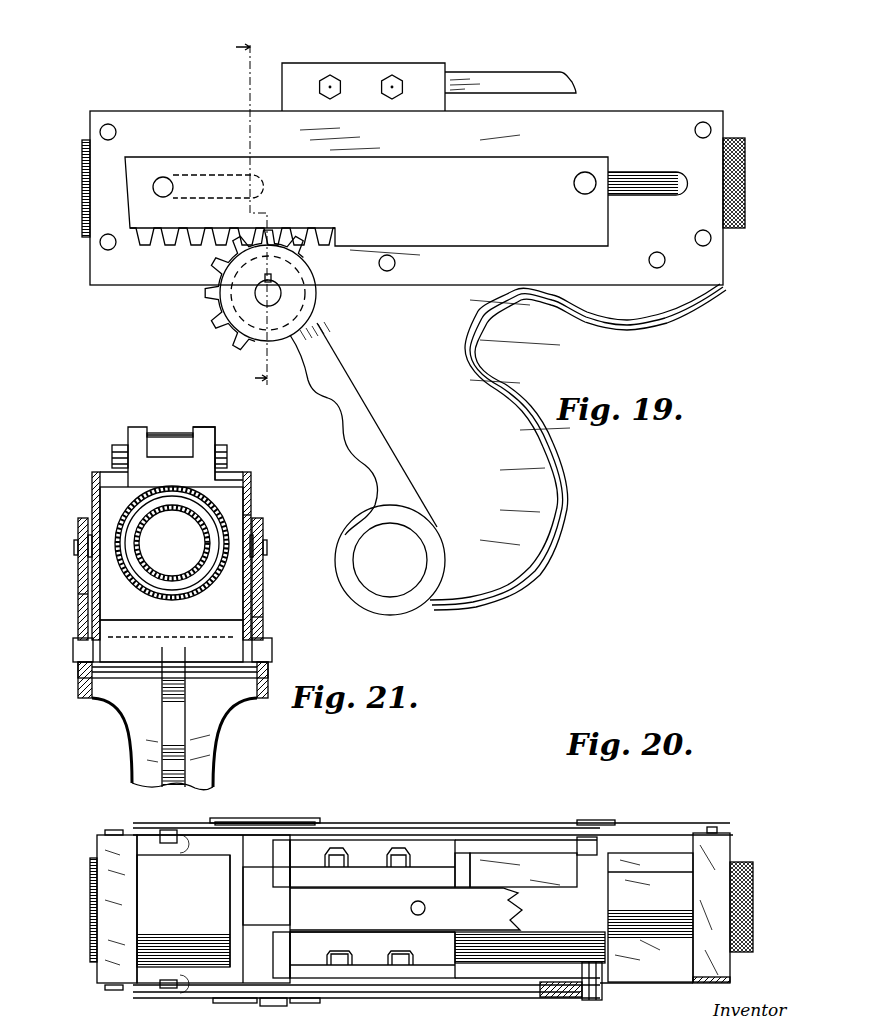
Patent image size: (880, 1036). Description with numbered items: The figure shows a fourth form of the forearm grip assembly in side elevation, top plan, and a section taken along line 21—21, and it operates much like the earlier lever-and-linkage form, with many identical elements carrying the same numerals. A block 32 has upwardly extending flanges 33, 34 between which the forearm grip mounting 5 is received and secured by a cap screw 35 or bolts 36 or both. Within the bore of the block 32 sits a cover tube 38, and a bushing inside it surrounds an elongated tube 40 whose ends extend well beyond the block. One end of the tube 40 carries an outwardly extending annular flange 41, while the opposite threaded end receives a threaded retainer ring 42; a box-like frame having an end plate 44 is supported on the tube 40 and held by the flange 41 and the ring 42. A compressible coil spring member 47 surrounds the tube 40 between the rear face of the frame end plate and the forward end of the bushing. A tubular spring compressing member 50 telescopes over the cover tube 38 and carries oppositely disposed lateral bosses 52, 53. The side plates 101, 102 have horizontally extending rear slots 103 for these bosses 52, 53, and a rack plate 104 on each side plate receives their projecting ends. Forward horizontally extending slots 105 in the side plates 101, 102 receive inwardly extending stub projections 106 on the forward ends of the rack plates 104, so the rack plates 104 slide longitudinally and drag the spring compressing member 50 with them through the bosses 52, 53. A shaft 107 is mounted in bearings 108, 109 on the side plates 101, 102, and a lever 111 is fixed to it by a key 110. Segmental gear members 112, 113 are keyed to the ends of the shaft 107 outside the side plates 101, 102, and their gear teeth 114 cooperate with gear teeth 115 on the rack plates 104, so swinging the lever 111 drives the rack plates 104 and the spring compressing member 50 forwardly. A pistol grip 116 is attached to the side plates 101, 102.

In FIG. 19, the forearm grip mounting 5 is at (536, 75).
In FIG. 21, the forearm grip mounting 5 is at (158, 433).
In FIG. 20, the forearm grip mounting 5 is at (512, 912).
In FIG. 19, the section line 21 is at (252, 214).
In FIG. 21, the block 32 is at (208, 481).
In FIG. 20, the block 32 is at (393, 970).
In FIG. 21, the flange 33 is at (136, 428).
In FIG. 20, the flange 33 is at (340, 878).
In FIG. 19, the flange 34 is at (355, 63).
In FIG. 21, the flange 34 is at (214, 428).
In FIG. 20, the flange 34 is at (360, 943).
In FIG. 21, the cap screw 35 is at (175, 431).
In FIG. 20, the cap screw 35 is at (427, 908).
In FIG. 19, the bolts 36 is at (400, 76).
In FIG. 21, the bolts 36 is at (111, 455).
In FIG. 20, the bolts 36 is at (395, 850).
In FIG. 20, the cover tube 38 is at (460, 862).
In FIG. 21, the elongated tube 40 is at (145, 548).
In FIG. 20, the elongated tube 40 is at (650, 875).
In FIG. 19, the annular flange 41 is at (82, 170).
In FIG. 20, the annular flange 41 is at (92, 895).
In FIG. 19, the threaded retainer ring 42 is at (735, 230).
In FIG. 20, the threaded retainer ring 42 is at (755, 863).
In FIG. 20, the end plate 44 is at (718, 850).
In FIG. 21, the compressible coil spring member 47 is at (203, 520).
In FIG. 20, the spring compressing member 50 is at (525, 860).
In FIG. 19, the boss 52 is at (592, 176).
In FIG. 20, the boss 52 is at (600, 1002).
In FIG. 20, the boss 53 is at (590, 820).
In FIG. 19, the side plate 101 is at (676, 268).
In FIG. 21, the side plate 101 is at (251, 515).
In FIG. 20, the side plate 101 is at (532, 985).
In FIG. 21, the side plate 102 is at (91, 490).
In FIG. 20, the side plate 102 is at (638, 834).
In FIG. 19, the rear slot 103 is at (640, 196).
In FIG. 20, the rear slot 103 is at (655, 985).
In FIG. 19, the rack plate 104 is at (548, 240).
In FIG. 21, the rack plate 104 is at (263, 573).
In FIG. 20, the rack plate 104 is at (475, 995).
In FIG. 19, the forward slot 105 is at (198, 180).
In FIG. 21, the forward slot 105 is at (253, 547).
In FIG. 19, the stub projection 106 is at (163, 177).
In FIG. 21, the stub projection 106 is at (78, 533).
In FIG. 20, the stub projection 106 is at (180, 990).
In FIG. 19, the shaft 107 is at (257, 293).
In FIG. 21, the shaft 107 is at (75, 655).
In FIG. 20, the shaft 107 is at (262, 1004).
In FIG. 21, the bearing 108 is at (238, 690).
In FIG. 20, the bearing 108 is at (278, 975).
In FIG. 21, the bearing 109 is at (110, 690).
In FIG. 20, the bearing 109 is at (275, 872).
In FIG. 21, the key 110 is at (263, 617).
In FIG. 19, the lever 111 is at (337, 397).
In FIG. 21, the lever 111 is at (190, 740).
In FIG. 19, the segmental gear member 112 is at (252, 327).
In FIG. 21, the segmental gear member 112 is at (268, 681).
In FIG. 20, the segmental gear member 112 is at (318, 1003).
In FIG. 21, the segmental gear member 113 is at (78, 620).
In FIG. 20, the segmental gear member 113 is at (310, 822).
In FIG. 19, the gear teeth 114 is at (212, 286).
In FIG. 20, the gear teeth 114 is at (225, 1004).
In FIG. 19, the gear teeth 115 is at (176, 250).
In FIG. 21, the gear teeth 115 is at (78, 594).
In FIG. 19, the pistol grip 116 is at (548, 493).
In FIG. 21, the pistol grip 116 is at (132, 775).